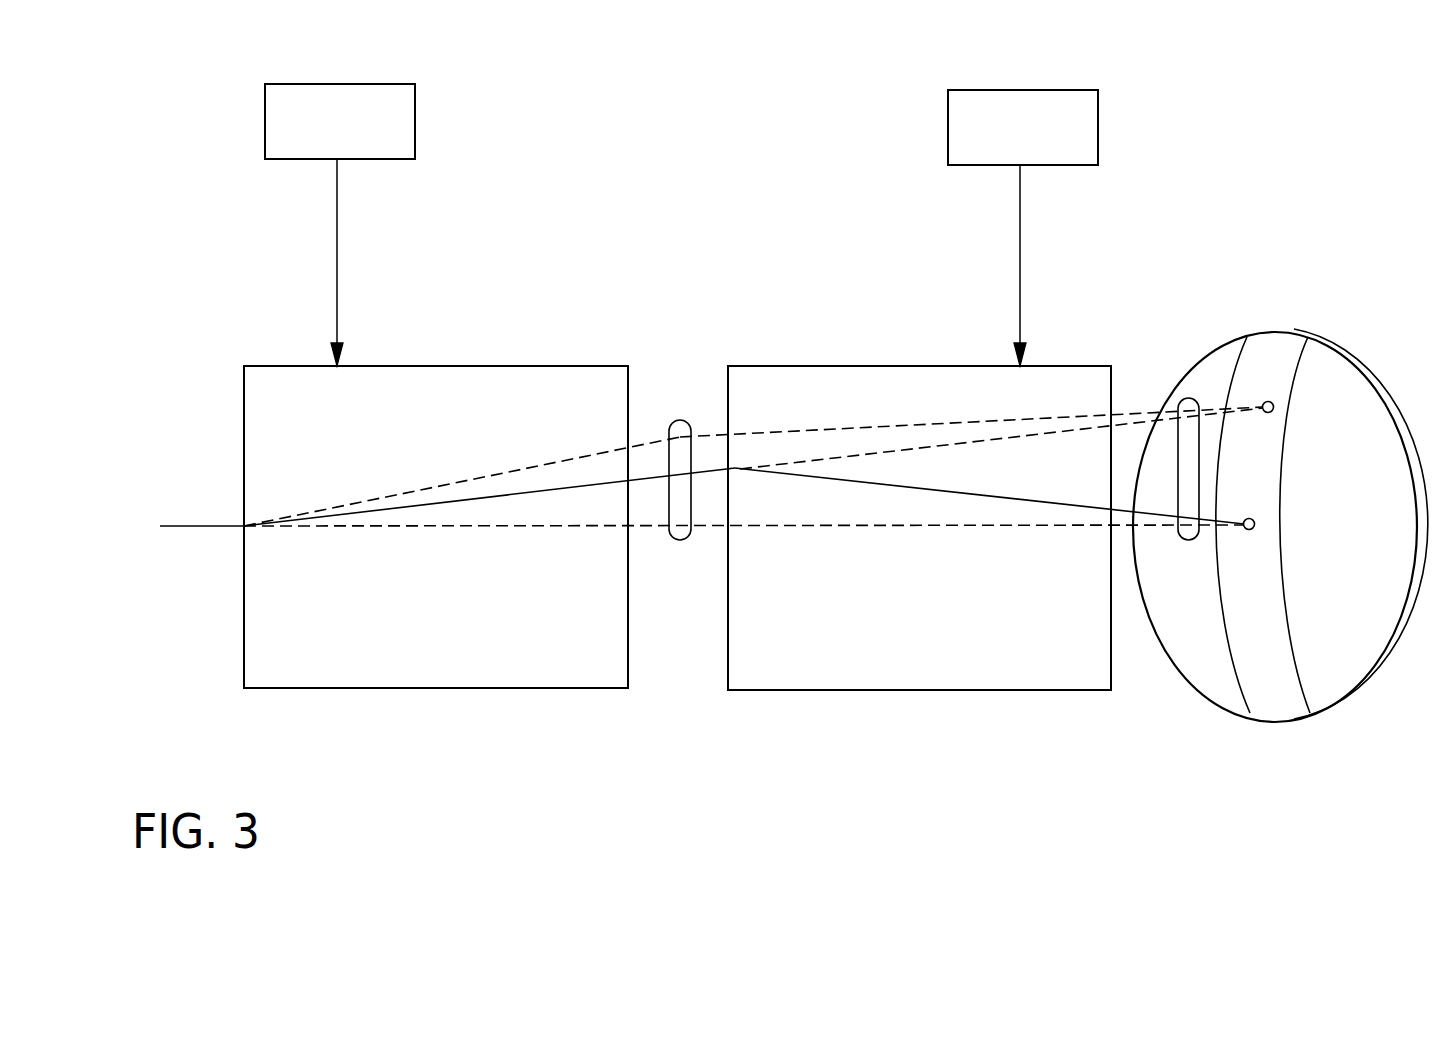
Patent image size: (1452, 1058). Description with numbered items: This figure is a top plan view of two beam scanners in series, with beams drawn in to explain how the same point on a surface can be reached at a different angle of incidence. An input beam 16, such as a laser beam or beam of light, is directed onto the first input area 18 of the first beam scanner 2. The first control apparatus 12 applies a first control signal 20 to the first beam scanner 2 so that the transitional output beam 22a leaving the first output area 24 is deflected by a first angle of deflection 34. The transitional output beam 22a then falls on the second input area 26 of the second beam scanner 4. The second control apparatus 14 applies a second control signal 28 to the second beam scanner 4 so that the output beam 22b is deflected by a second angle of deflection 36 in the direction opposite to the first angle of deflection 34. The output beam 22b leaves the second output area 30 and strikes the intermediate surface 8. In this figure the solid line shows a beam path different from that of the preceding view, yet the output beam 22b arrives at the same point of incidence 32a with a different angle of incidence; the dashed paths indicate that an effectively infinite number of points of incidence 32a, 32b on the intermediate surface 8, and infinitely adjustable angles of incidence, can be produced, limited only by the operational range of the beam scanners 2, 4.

The first beam scanner 2 is at (333, 688).
The second beam scanner 4 is at (963, 690).
The intermediate surface 8 is at (1282, 348).
The first control apparatus 12 is at (355, 131).
The second control apparatus 14 is at (1038, 140).
The input beam 16 is at (217, 527).
The first input area 18 is at (244, 490).
The first control signal 20 is at (333, 260).
The transitional output beam 22a is at (683, 540).
The output beam 22b is at (1187, 540).
The first output area 24 is at (628, 400).
The second input area 26 is at (728, 407).
The second control signal 28 is at (1020, 280).
The second output area 30 is at (1111, 633).
The point of incidence 32a is at (1255, 523).
The point of incidence 32b is at (1265, 402).
The first angle of deflection 34 is at (552, 525).
The second angle of deflection 36 is at (1005, 497).